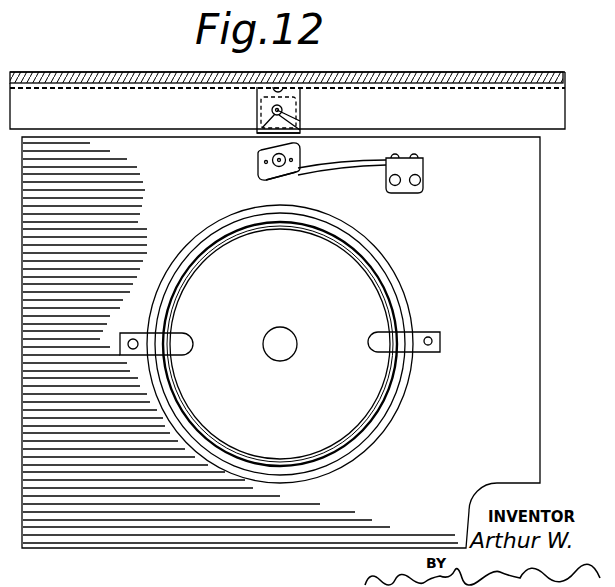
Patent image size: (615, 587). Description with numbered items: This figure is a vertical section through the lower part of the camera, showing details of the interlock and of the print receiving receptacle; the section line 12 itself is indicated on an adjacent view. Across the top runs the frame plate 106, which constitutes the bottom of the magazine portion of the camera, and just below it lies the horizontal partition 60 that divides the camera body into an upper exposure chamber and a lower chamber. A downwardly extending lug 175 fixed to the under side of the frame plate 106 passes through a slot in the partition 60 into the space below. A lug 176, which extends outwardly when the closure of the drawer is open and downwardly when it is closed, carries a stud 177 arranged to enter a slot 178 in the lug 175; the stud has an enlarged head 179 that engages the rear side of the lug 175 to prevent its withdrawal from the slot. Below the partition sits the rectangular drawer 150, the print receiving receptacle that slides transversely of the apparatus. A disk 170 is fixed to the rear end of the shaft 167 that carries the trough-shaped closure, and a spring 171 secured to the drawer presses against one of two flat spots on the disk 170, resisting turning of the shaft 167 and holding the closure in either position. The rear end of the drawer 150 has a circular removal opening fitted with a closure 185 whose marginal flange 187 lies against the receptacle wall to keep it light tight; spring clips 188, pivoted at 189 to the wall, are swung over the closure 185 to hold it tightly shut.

The frame 12 is at (500, 9).
The frame plate 106 is at (470, 73).
The horizontal partition 60 is at (520, 89).
The downwardly extending lug 175 is at (257, 99).
The stud 177 is at (272, 110).
The slot 178 is at (298, 119).
The lug 176 is at (300, 131).
The enlarged head 179 is at (263, 134).
The disk 170 is at (262, 176).
The shaft 167 is at (294, 158).
The spring 171 is at (347, 163).
The drawer 150 is at (538, 287).
The marginal flange 187 is at (399, 276).
The closure 185 is at (300, 274).
The spring clips 188 is at (178, 336).
The pivot 189 is at (133, 339).